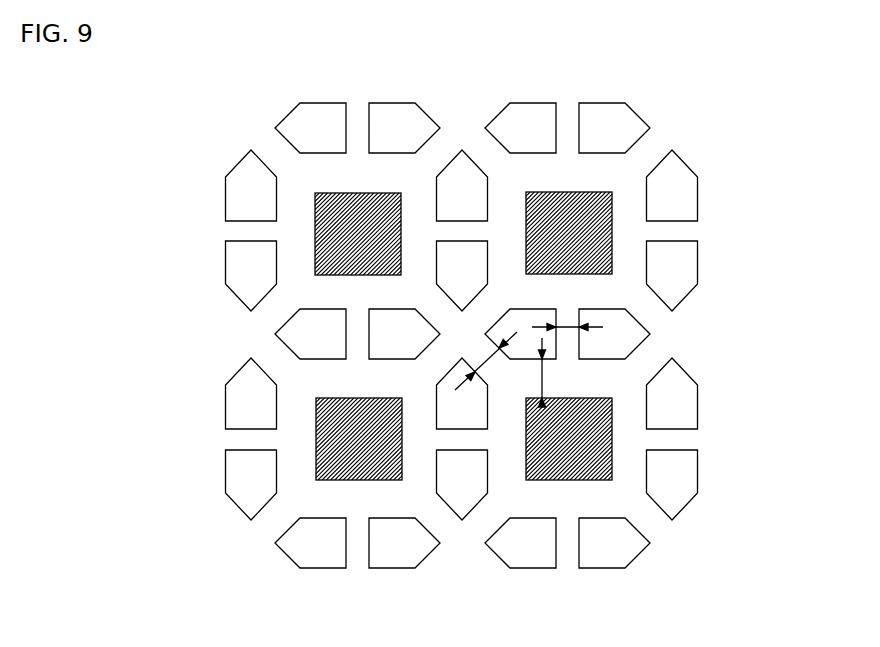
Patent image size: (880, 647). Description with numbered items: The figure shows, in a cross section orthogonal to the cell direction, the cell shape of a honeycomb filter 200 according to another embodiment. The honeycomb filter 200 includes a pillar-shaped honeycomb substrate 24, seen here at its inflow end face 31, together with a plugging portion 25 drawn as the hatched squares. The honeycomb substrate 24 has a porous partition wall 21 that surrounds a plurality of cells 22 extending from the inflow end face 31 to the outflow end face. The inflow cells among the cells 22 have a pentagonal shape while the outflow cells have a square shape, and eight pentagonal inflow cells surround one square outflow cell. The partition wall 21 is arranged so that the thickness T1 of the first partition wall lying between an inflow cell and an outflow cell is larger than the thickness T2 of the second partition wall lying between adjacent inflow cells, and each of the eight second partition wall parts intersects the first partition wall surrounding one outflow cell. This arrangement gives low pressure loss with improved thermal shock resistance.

The honeycomb filter 200 is at (762, 61).
The honeycomb substrate 24 is at (697, 134).
The inflow end face 31 is at (425, 83).
The porous partition wall 21 is at (478, 355).
The cells 22 is at (610, 334).
The plugging portion 25 is at (587, 467).
The thickness of the first partition wall T1 is at (542, 377).
The thickness of the second partition wall T2 is at (567, 327).